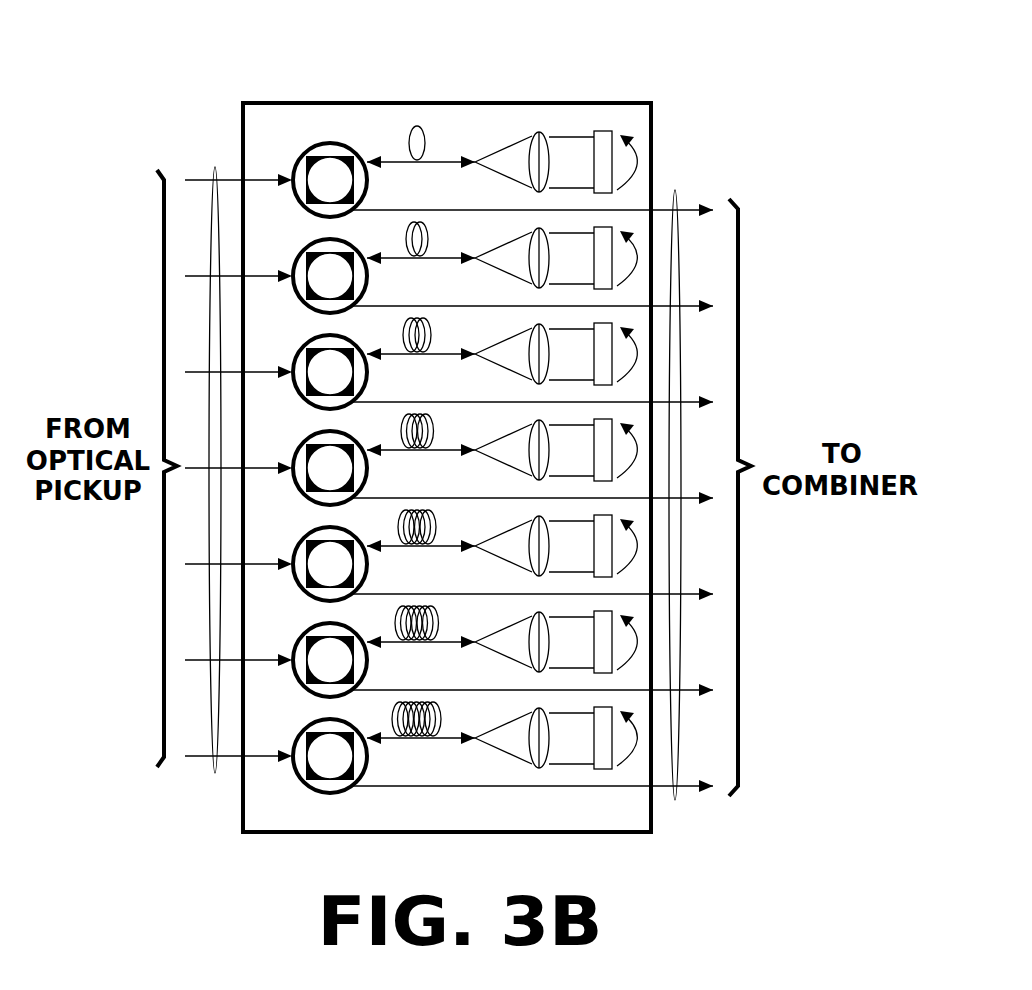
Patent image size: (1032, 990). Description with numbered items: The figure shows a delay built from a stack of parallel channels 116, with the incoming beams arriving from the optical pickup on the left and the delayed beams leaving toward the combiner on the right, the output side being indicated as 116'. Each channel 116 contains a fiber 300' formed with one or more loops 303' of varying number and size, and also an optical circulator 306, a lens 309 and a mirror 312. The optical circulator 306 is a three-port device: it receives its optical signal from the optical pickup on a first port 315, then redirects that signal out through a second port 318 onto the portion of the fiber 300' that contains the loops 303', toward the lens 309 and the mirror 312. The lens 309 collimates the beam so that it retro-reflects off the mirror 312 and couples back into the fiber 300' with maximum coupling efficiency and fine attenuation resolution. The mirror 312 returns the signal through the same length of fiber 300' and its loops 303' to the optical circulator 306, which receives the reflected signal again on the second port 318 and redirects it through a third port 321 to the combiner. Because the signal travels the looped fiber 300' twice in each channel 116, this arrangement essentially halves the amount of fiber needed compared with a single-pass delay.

The channel 116 is at (212, 418).
The output lens 116' is at (706, 469).
The optical circulator 306 is at (330, 143).
The loop 303' is at (398, 111).
The fiber 300' is at (421, 92).
The second port 318 is at (360, 156).
The port 315 is at (293, 178).
The third port 321 is at (365, 211).
The lens 309 is at (538, 132).
The mirror 312 is at (603, 131).